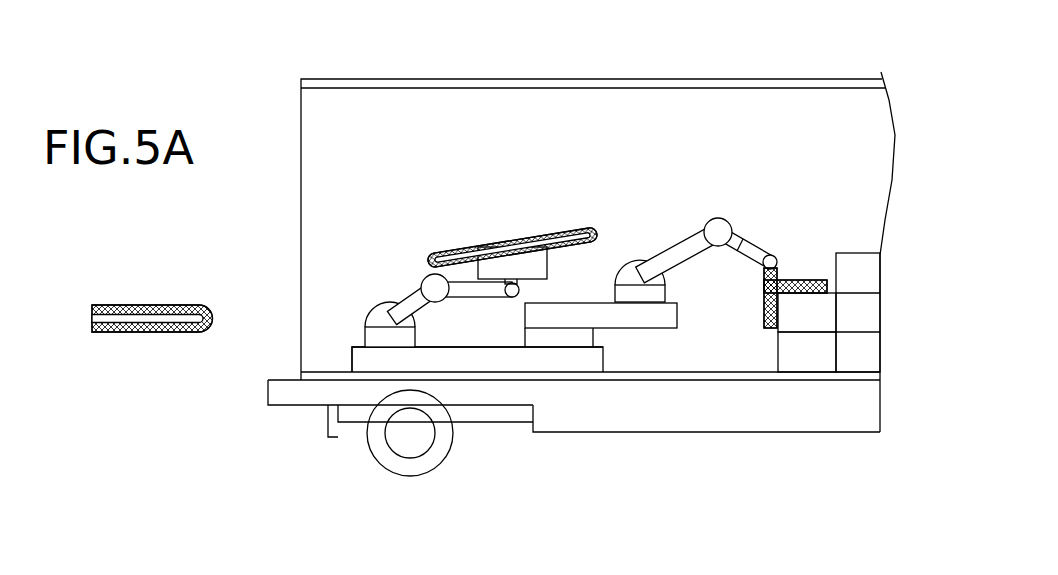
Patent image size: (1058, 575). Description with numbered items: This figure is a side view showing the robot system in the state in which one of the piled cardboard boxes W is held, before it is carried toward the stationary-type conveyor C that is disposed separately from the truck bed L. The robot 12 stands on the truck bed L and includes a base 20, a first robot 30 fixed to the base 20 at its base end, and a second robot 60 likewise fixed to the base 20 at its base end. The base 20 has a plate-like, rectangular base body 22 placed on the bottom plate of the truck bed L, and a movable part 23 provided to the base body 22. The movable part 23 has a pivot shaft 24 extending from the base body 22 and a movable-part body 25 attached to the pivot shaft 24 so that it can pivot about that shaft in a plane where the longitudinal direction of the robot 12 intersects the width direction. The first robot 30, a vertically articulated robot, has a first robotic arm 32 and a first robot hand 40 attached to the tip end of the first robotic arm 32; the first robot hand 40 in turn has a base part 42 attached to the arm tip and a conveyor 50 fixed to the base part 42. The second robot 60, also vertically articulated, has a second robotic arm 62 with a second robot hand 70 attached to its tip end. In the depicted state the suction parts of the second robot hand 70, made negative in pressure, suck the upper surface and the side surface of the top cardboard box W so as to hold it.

The truck bed L is at (341, 78).
The robot 12 is at (463, 161).
The base 20 is at (347, 336).
The base body 22 is at (513, 355).
The movable part 23 is at (596, 293).
The pivot shaft 24 is at (573, 340).
The movable-part body 25 is at (633, 318).
The first robot 30 is at (463, 260).
The first robotic arm 32 is at (403, 296).
The first robot hand 40 is at (443, 234).
The base part 42 is at (532, 240).
The conveyor 50 is at (486, 242).
The second robot 60 is at (696, 214).
The second robotic arm 62 is at (681, 238).
The second robot hand 70 is at (811, 252).
The cardboard box W is at (857, 318).
The stationary-type conveyor C is at (145, 332).